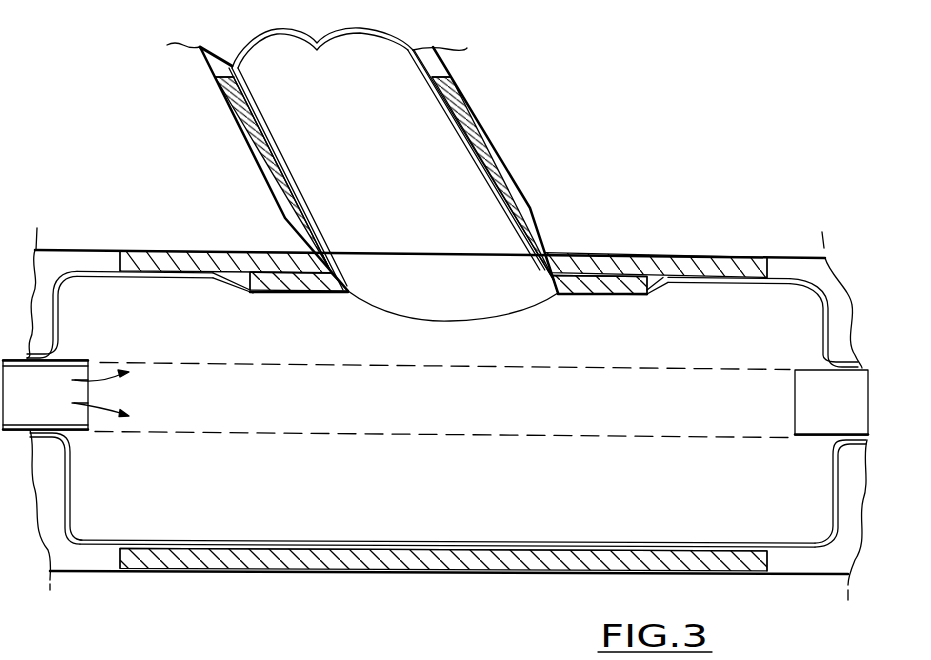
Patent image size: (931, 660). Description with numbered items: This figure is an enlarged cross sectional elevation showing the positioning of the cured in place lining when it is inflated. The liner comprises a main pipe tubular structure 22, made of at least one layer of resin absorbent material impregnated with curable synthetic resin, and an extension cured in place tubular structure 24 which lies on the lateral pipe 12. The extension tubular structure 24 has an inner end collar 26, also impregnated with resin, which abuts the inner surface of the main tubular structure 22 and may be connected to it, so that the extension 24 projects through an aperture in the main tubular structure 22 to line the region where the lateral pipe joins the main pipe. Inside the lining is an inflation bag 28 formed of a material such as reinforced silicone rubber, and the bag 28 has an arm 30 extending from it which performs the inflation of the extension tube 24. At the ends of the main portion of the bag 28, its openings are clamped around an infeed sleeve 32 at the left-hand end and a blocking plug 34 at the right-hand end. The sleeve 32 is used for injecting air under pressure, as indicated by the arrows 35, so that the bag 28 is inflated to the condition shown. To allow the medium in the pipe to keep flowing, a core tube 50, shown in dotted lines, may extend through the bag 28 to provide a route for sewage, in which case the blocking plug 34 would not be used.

The lateral pipe 12 is at (229, 89).
The main pipe tubular structure 22 is at (187, 250).
The extension cured in place tubular structure 24 is at (257, 139).
The inner end collar 26 is at (277, 278).
The inflation bag 28 is at (655, 295).
The arm 30 is at (491, 178).
The infeed sleeve 32 is at (78, 358).
The blocking plug 34 is at (794, 400).
The arrows 35 is at (106, 407).
The core tube 50 is at (397, 434).